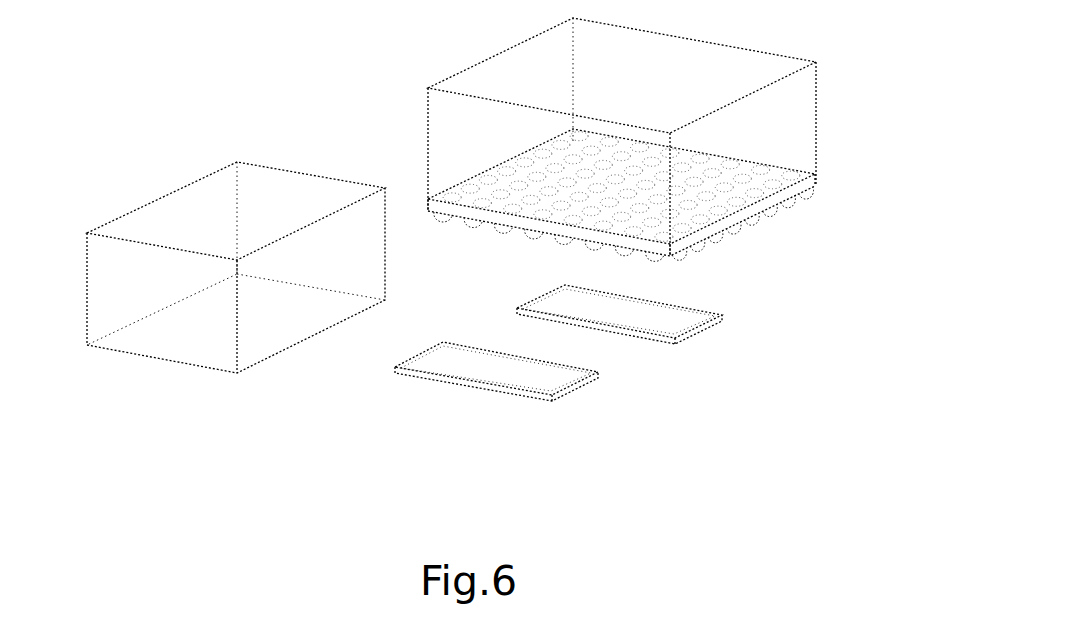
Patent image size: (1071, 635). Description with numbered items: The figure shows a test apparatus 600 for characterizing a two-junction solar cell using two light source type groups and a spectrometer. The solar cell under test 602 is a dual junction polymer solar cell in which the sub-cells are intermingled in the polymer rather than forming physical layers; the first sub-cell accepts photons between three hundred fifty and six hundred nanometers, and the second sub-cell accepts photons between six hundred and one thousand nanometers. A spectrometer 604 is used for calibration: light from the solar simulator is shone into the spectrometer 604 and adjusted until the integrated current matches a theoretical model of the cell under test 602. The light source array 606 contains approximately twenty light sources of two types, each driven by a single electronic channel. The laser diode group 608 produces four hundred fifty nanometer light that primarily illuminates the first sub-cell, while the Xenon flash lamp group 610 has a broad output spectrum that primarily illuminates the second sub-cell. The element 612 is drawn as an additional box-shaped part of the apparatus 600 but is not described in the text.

The test apparatus 600 is at (429, 79).
The solar cell under test 602 is at (697, 338).
The spectrometer 604 is at (575, 395).
The light source array 606 is at (730, 176).
The laser diode group 608 is at (810, 200).
The Xenon flash lamp group 610 is at (787, 212).
The cover box 612 is at (197, 215).